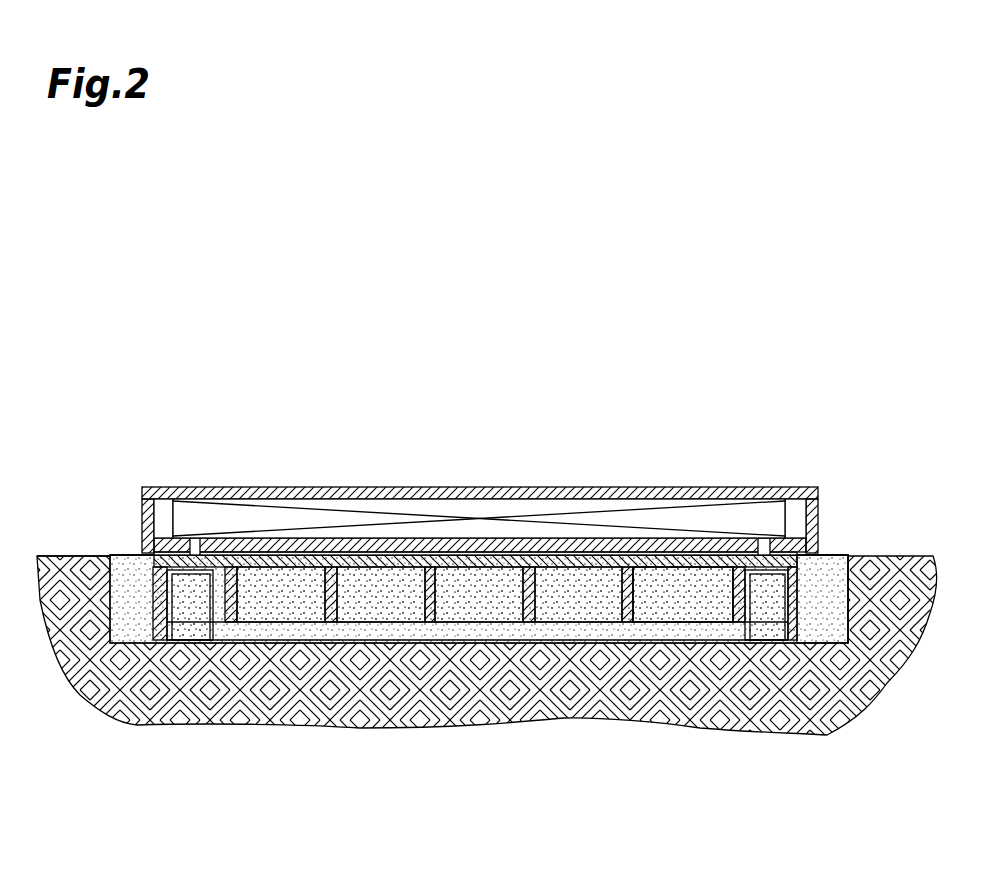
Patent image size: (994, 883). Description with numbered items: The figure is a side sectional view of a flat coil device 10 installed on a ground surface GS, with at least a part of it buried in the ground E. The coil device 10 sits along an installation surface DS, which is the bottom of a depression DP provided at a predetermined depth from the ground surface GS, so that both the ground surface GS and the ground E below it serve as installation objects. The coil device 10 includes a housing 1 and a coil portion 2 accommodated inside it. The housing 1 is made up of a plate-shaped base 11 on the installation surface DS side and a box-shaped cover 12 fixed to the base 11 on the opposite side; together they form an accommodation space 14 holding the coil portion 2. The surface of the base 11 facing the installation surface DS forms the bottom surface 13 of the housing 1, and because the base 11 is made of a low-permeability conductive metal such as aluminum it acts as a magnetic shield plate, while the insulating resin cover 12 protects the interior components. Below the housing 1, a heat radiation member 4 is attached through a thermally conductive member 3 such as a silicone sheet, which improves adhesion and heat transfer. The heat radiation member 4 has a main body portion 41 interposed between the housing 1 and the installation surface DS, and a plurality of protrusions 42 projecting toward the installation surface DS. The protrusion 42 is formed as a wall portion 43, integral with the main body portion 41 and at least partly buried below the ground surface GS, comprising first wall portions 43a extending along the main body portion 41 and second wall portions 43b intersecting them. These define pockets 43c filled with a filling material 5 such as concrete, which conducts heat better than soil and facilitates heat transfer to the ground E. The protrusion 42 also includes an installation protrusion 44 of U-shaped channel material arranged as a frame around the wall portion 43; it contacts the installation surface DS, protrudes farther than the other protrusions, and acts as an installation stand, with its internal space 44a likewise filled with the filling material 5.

The coil device 10 is at (826, 216).
The housing 1 is at (487, 465).
The base 11 is at (798, 537).
The cover 12 is at (745, 487).
The bottom surface 13 is at (810, 573).
The accommodation space 14 is at (163, 513).
The coil portion 2 is at (210, 513).
The thermally conductive member 3 is at (130, 560).
The heat radiation member 4 is at (448, 700).
The main body portion 41 is at (152, 568).
The protrusion 42 is at (267, 626).
The wall portion 43 is at (485, 700).
The first wall portion 43a is at (342, 603).
The second wall portion 43b is at (490, 605).
The pocket 43c is at (601, 598).
The installation protrusion 44 is at (167, 628).
The space 44a is at (770, 626).
The filling material 5 is at (698, 598).
The depression DP is at (124, 568).
The ground surface GS is at (110, 556).
The installation surface DS is at (323, 628).
The ground E is at (99, 691).